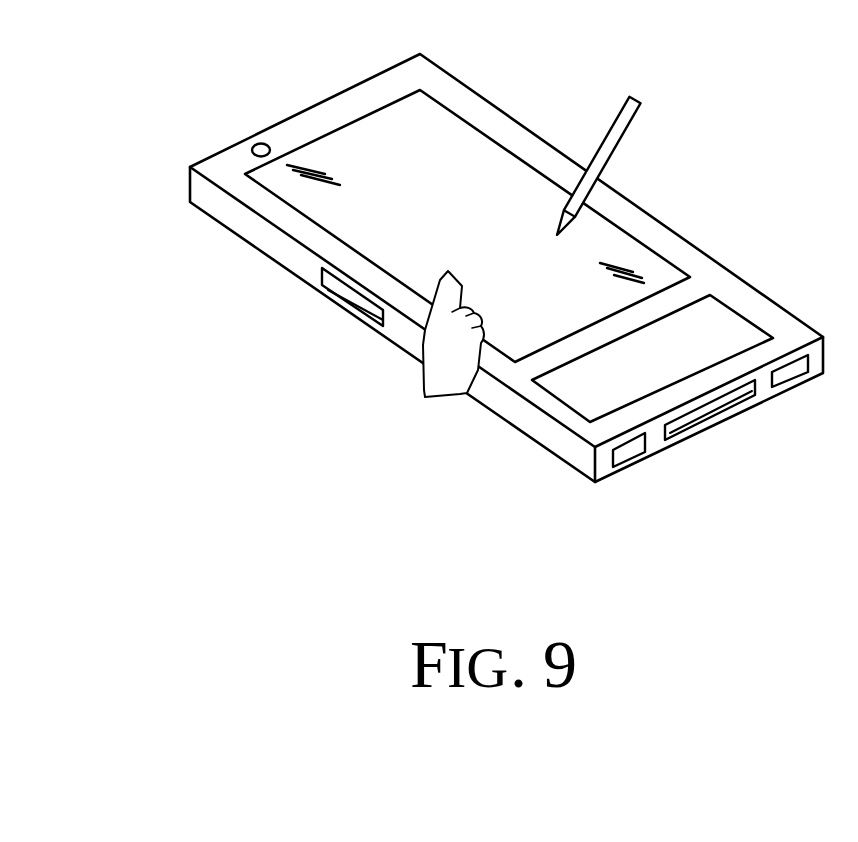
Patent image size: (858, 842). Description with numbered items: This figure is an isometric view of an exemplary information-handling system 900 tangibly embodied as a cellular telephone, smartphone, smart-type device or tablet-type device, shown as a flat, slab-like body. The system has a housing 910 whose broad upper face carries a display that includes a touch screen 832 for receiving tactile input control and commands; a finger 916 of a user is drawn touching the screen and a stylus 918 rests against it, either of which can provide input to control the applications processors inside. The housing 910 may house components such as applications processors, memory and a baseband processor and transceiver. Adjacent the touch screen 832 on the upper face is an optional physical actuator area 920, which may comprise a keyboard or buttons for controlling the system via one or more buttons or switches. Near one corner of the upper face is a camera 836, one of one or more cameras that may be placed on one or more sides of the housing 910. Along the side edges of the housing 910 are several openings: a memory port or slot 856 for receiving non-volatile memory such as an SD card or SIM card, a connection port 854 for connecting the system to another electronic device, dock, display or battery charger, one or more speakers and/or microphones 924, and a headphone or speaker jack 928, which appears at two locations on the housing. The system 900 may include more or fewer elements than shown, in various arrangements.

The electronic device 900 is at (518, 75).
The housing 910 is at (377, 73).
The touch screen 832 is at (489, 225).
The camera 836 is at (254, 143).
The stylus 918 is at (621, 113).
The finger 916 is at (453, 284).
The physical actuator area 920 is at (718, 328).
The headphone or speaker jack 928 is at (208, 157).
The memory port or slot 856 is at (327, 292).
The connection port 854 is at (727, 417).
The speakers and/or microphones 924 is at (793, 377).